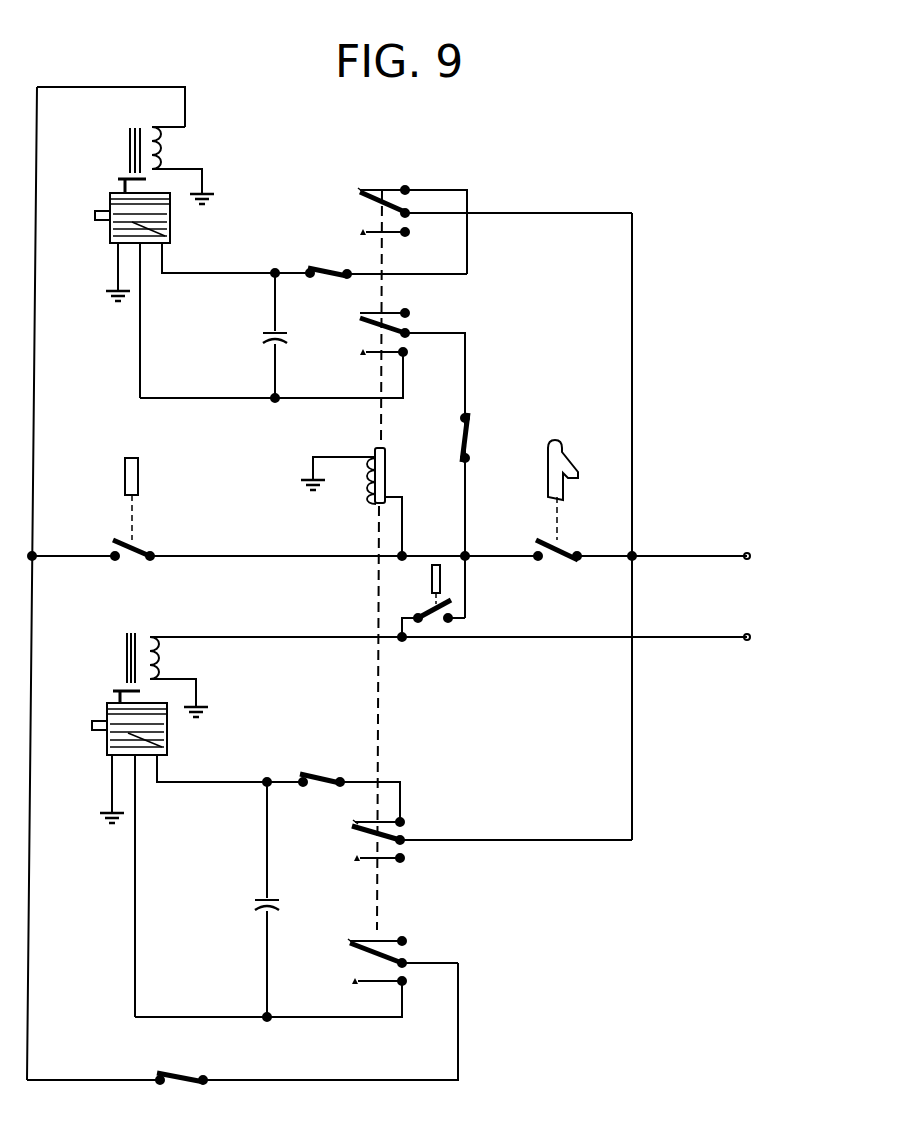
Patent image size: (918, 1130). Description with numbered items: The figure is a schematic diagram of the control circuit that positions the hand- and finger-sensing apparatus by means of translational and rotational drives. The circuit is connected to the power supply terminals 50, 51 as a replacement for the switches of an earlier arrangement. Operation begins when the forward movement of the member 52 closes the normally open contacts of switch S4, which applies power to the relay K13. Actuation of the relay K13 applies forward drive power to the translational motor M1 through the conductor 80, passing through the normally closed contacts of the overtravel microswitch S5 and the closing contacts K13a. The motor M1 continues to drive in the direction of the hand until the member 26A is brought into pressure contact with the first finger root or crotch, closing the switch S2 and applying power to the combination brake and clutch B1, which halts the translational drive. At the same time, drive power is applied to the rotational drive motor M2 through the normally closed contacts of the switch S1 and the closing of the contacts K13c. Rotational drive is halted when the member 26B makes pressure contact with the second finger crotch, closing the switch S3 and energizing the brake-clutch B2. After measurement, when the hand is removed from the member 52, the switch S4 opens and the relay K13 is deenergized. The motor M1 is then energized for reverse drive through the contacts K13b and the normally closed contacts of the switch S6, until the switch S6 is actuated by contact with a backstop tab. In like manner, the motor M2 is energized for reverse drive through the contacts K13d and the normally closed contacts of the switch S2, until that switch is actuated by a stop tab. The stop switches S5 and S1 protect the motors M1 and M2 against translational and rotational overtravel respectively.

The combination brake and clutch B1 is at (122, 153).
The translational drive motor M1 is at (158, 226).
The conductor 80 is at (191, 398).
The normally closed switch S6 is at (322, 266).
The relay contacts K13b is at (356, 188).
The relay closing contacts K13a is at (351, 338).
The overtravel microswitch S5 is at (471, 443).
The relay K13 is at (388, 480).
The terminal 50 is at (403, 557).
The switch S2 is at (136, 547).
The finger-contacting member 26A is at (140, 478).
The hand-actuated member 52 is at (563, 461).
The normally open switch S4 is at (562, 551).
The finger-contacting member 26B is at (430, 580).
The switch S3 is at (466, 611).
The terminal 51 is at (464, 638).
The brake-clutch B2 is at (120, 656).
The rotational drive motor M2 is at (125, 733).
The relay contacts K13d is at (355, 820).
The relay closing contacts K13c is at (348, 947).
The normally closed stop switch S1 is at (177, 1075).